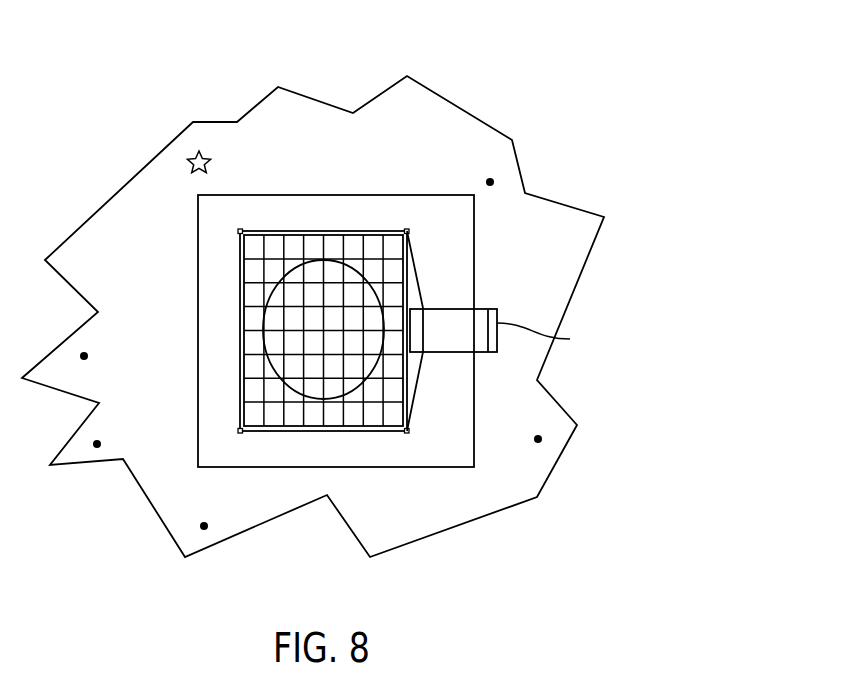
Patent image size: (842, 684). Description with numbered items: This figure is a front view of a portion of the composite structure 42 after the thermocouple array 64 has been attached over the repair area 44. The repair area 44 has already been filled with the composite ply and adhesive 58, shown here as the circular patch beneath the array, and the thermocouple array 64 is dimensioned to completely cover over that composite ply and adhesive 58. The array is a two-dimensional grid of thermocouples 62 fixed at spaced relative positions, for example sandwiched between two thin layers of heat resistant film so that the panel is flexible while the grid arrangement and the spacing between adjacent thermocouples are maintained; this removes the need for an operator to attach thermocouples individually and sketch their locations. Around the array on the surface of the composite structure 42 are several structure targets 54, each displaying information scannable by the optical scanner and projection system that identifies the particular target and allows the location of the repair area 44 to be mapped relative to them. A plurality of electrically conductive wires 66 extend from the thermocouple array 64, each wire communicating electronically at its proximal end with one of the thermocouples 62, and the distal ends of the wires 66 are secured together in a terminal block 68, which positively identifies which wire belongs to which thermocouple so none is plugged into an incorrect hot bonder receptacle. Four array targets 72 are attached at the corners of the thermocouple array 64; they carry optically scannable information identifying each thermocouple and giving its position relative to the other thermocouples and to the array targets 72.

The composite structure 42 is at (427, 118).
The repair area 44 is at (652, 286).
The structure targets 54 is at (197, 153).
The composite ply and adhesive 58 is at (303, 372).
The thermocouples 62 is at (352, 244).
The thermocouple array 64 is at (347, 432).
The electrically conductive wires 66 is at (453, 352).
The terminal block 68 is at (547, 338).
The array targets 72 is at (406, 231).